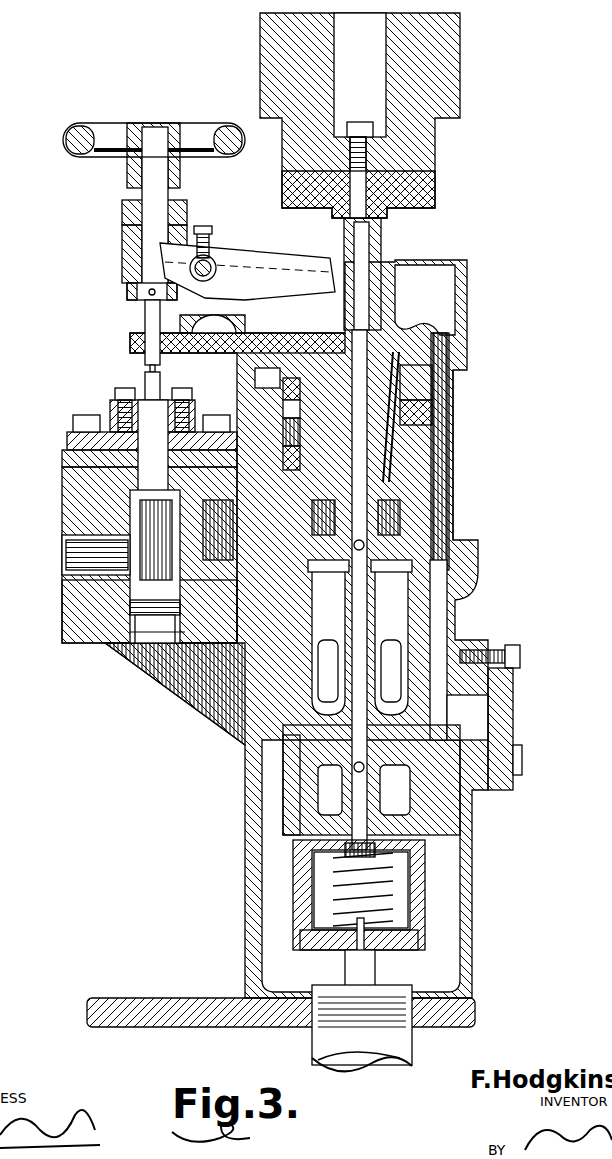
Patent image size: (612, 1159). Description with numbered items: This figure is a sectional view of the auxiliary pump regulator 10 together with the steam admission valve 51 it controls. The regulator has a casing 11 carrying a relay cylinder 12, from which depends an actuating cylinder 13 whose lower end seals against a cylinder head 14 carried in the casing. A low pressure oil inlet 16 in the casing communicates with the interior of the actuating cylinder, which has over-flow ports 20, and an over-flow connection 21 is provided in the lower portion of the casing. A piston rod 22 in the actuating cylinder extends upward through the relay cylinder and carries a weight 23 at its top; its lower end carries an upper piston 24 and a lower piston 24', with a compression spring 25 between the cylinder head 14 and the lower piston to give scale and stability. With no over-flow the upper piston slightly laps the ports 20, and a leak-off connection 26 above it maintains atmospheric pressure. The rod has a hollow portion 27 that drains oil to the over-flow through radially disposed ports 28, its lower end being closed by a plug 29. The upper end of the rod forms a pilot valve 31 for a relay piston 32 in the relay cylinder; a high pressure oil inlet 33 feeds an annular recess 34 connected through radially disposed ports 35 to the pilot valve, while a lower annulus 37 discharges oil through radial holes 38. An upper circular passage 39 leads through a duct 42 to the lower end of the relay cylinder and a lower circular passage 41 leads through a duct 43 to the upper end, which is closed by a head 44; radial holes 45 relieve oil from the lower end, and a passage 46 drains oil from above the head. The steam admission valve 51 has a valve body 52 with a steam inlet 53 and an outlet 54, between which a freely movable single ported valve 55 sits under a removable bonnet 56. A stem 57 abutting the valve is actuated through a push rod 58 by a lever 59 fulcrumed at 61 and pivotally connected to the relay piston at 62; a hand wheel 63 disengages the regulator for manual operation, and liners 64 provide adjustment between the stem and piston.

The auxiliary pump regulator 10 is at (531, 486).
The casing 11 is at (455, 620).
The relay cylinder 12 is at (454, 494).
The actuating cylinder 13 is at (428, 847).
The cylinder head 14 is at (428, 925).
The low pressure oil inlet 16 is at (405, 783).
The over-flow ports 20 is at (447, 722).
The over-flow connection 21 is at (413, 1045).
The piston rod 22 is at (345, 624).
The weight 23 is at (462, 40).
The upper piston 24 is at (509, 717).
The lower piston 24' is at (418, 890).
The compression spring 25 is at (335, 905).
The leak-off connection 26 is at (415, 592).
The hollow portion 27 is at (360, 723).
The radially disposed ports 28 is at (355, 770).
The plug 29 is at (292, 836).
The pilot valve 31 is at (386, 440).
The relay piston 32 is at (402, 520).
The high pressure oil inlet 33 is at (292, 458).
The annular recess 34 is at (292, 435).
The radially disposed ports 35 is at (292, 410).
The annulus 37 is at (337, 528).
The radial holes 38 is at (360, 551).
The upper circular passage 39 is at (417, 383).
The lower circular passage 41 is at (392, 480).
The duct 42 is at (300, 485).
The duct 43 is at (447, 442).
The head 44 is at (418, 328).
The radial holes 45 is at (362, 325).
The passage 46 is at (447, 346).
The steam admission valve 51 is at (62, 490).
The valve body 52 is at (85, 610).
The steam inlet 53 is at (150, 632).
The outlet 54 is at (62, 553).
The valve 55 is at (160, 535).
The bonnet 56 is at (67, 458).
The stem 57 is at (150, 392).
The push rod 58 is at (150, 360).
The lever 59 is at (276, 252).
The fulcrum 61 is at (206, 262).
The pivotal connection 62 is at (356, 252).
The hand wheel 63 is at (80, 124).
The liners 64 is at (127, 294).